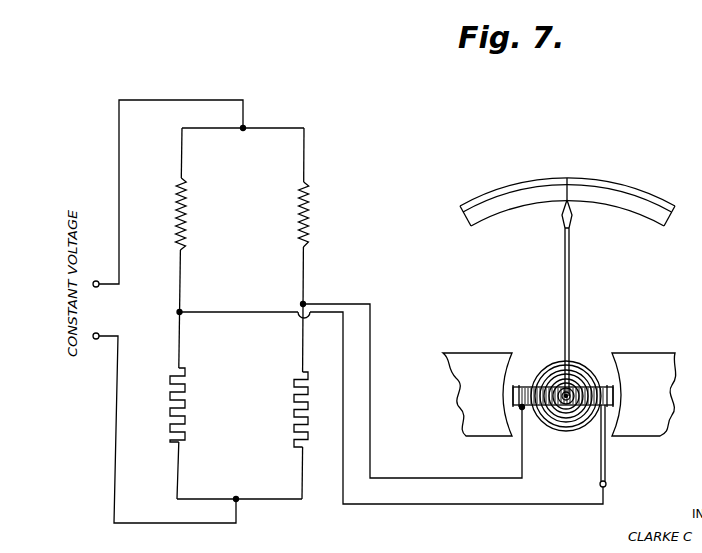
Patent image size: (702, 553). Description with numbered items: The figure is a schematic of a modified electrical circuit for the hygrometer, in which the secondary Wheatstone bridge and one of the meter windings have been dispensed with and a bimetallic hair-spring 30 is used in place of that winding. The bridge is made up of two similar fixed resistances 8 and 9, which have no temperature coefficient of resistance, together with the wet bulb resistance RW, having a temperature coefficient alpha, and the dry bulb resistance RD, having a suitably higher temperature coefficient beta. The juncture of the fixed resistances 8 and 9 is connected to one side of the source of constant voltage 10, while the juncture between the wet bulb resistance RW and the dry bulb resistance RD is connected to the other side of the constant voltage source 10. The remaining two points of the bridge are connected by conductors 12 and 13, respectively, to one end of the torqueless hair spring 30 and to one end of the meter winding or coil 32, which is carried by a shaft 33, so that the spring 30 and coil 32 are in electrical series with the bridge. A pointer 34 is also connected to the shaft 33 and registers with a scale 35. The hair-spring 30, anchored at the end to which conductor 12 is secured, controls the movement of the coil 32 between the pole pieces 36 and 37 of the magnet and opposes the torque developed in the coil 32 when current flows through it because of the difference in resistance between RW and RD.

The fixed resistance 8 is at (186, 404).
The fixed resistance 9 is at (293, 424).
The source of constant voltage 10 is at (97, 288).
The conductor 12 is at (412, 506).
The conductor 13 is at (432, 479).
The bimetallic hair-spring 30 is at (571, 420).
The meter winding or coil 32 is at (520, 384).
The shaft 33 is at (560, 406).
The pointer 34 is at (570, 320).
The scale 35 is at (629, 186).
The pole piece 36 is at (477, 357).
The pole piece 37 is at (655, 365).
The wet bulb resistance RW is at (177, 228).
The dry bulb resistance RD is at (308, 214).